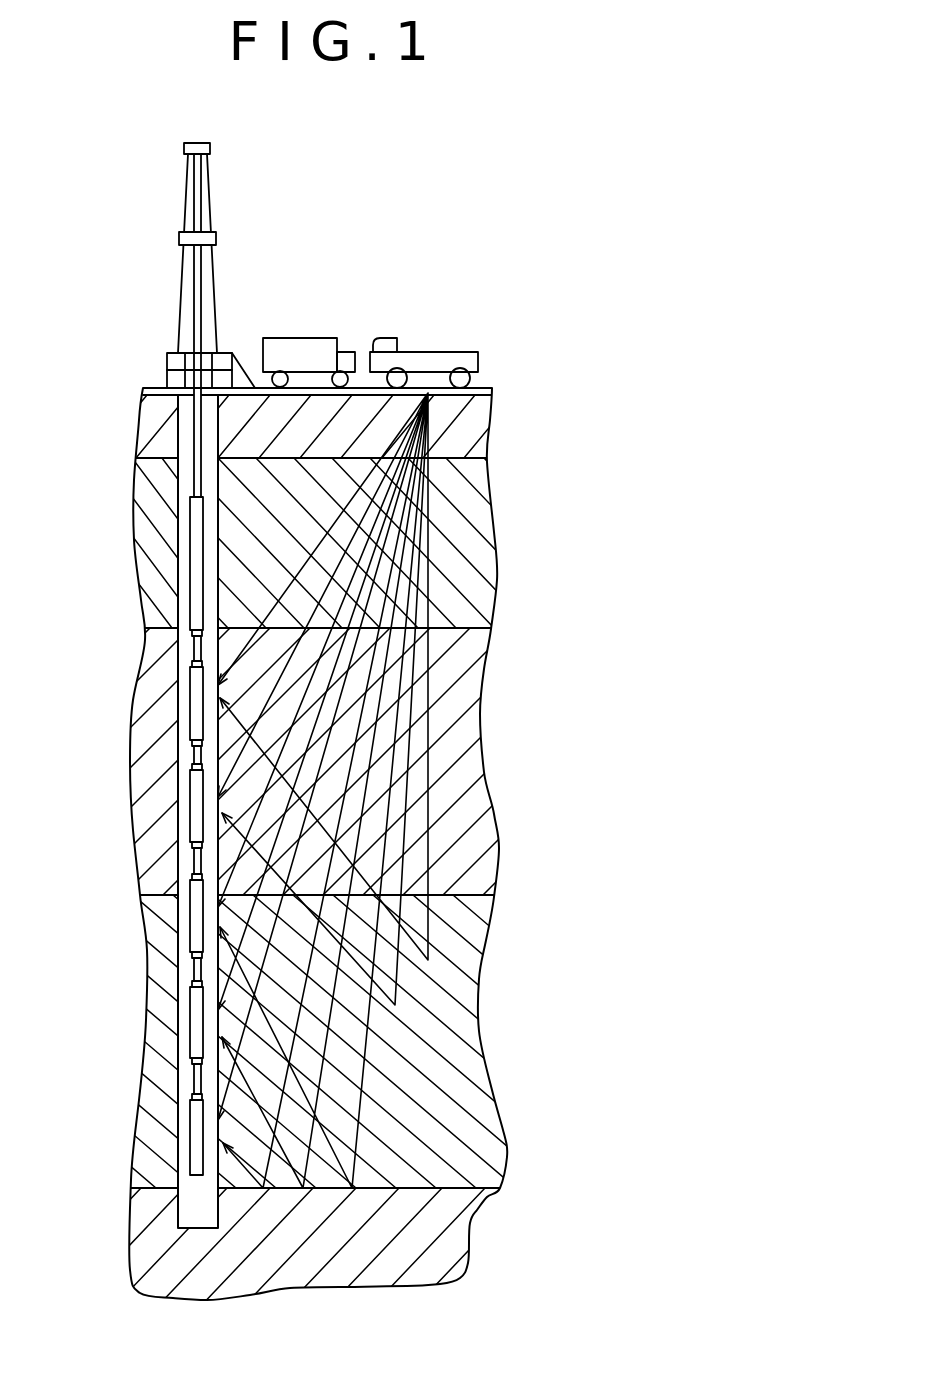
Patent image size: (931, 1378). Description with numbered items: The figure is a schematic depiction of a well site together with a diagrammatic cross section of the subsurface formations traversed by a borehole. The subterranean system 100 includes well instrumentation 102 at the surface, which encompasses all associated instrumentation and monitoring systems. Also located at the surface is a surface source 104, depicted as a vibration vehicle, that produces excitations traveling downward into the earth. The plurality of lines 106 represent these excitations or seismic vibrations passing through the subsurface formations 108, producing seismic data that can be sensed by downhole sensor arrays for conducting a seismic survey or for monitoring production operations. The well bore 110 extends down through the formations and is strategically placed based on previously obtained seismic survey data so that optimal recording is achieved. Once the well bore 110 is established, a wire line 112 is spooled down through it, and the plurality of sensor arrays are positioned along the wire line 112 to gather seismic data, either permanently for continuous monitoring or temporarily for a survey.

The subterranean system 100 is at (407, 240).
The well instrumentation 102 is at (157, 348).
The surface source 104 is at (458, 333).
The plurality of lines 106 is at (431, 574).
The subsurface formations 108 is at (449, 991).
The well bore 110 is at (190, 653).
The wire line 112 is at (197, 753).